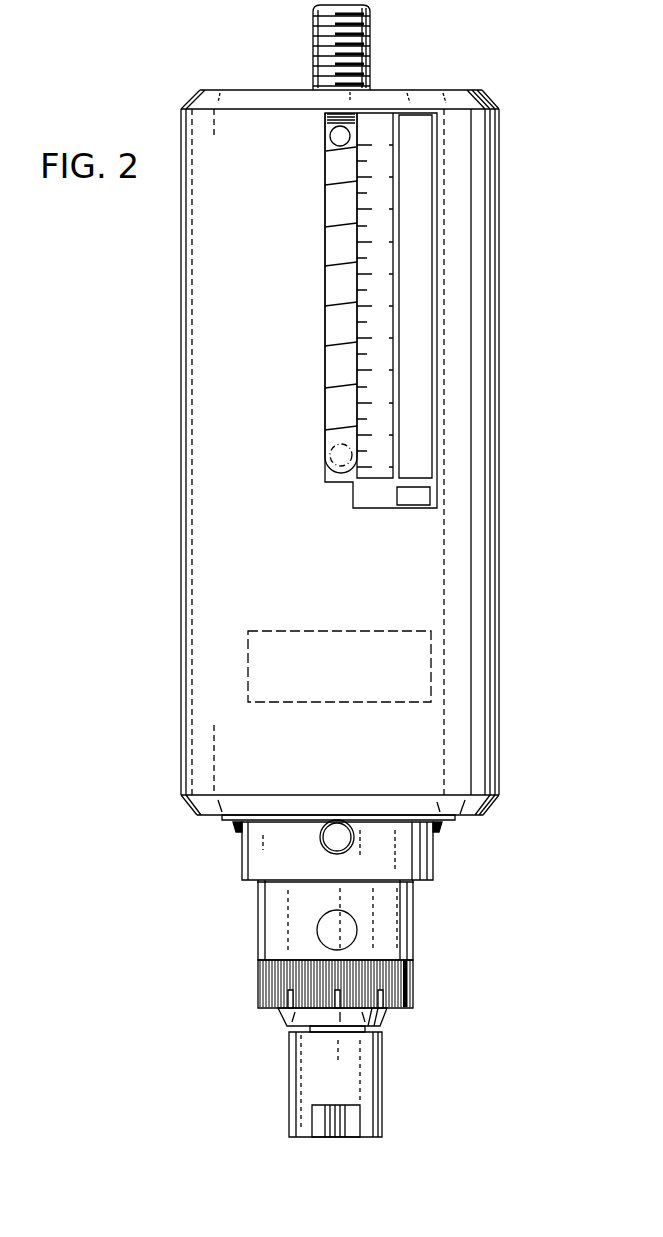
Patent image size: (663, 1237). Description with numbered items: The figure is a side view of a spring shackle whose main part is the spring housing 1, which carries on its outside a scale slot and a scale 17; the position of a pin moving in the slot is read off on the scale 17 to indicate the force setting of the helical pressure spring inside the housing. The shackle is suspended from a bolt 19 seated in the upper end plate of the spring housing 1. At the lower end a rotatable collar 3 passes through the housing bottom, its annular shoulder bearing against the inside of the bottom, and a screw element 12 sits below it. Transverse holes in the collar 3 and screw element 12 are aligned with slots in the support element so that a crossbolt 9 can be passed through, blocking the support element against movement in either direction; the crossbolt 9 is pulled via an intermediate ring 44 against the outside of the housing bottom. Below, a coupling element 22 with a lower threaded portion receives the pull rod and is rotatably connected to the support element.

The spring housing 1 is at (427, 583).
The rotatable collar 3 is at (262, 868).
The crossbolt 9 is at (333, 838).
The screw element 12 is at (281, 938).
The scale 17 is at (365, 296).
The bolt 19 is at (332, 50).
The coupling element 22 is at (310, 1061).
The intermediate ring 44 is at (448, 818).